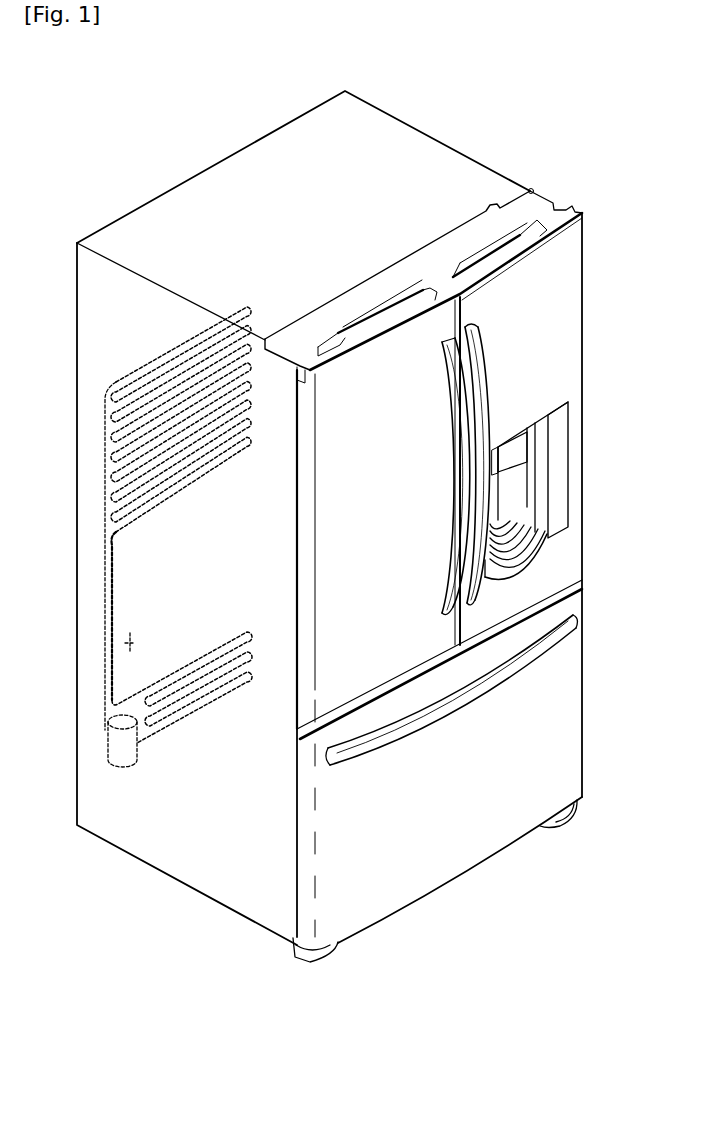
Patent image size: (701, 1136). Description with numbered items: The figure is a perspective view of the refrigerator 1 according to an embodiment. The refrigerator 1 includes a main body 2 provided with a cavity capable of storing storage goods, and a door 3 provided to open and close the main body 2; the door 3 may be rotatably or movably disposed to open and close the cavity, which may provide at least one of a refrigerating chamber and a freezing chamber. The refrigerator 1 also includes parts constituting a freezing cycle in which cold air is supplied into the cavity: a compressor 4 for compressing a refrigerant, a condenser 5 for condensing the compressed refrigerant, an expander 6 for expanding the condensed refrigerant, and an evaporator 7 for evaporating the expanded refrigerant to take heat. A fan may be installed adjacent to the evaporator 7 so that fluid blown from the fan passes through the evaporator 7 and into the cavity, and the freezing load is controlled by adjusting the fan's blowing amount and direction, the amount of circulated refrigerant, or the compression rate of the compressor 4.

The refrigerator 1 is at (323, 499).
The main body 2 is at (495, 188).
The door 3 is at (555, 375).
The compressor 4 is at (108, 745).
The condenser 5 is at (183, 717).
The expander 6 is at (128, 647).
The evaporator 7 is at (145, 362).